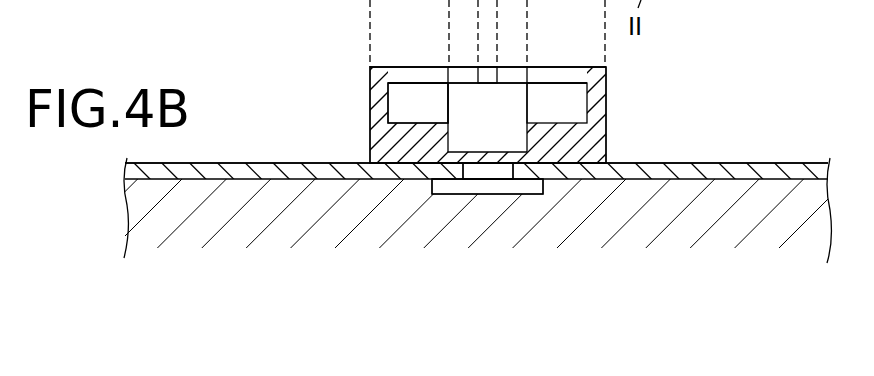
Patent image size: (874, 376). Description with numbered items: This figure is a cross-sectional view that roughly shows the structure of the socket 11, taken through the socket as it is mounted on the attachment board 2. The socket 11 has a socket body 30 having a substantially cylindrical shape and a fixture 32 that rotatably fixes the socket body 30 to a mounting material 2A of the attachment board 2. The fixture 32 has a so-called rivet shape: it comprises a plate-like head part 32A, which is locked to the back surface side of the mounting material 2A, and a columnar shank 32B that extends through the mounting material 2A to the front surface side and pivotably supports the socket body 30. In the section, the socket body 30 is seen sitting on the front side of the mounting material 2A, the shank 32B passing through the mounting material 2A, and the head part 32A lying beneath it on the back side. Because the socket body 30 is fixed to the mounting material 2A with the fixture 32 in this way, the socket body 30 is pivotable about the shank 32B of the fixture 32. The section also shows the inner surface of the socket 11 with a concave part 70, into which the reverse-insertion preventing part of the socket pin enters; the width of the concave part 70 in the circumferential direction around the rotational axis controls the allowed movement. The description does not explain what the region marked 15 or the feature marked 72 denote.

The attachment board 2 is at (811, 158).
The mounting material 2A is at (766, 162).
The socket 11 is at (643, 92).
The cavity 15 is at (421, 99).
The socket body 30 is at (606, 118).
The fixture 32 is at (547, 312).
The head part 32A is at (467, 188).
The shank 32B is at (499, 173).
The concave part 70 is at (577, 69).
The projection 72 is at (491, 82).